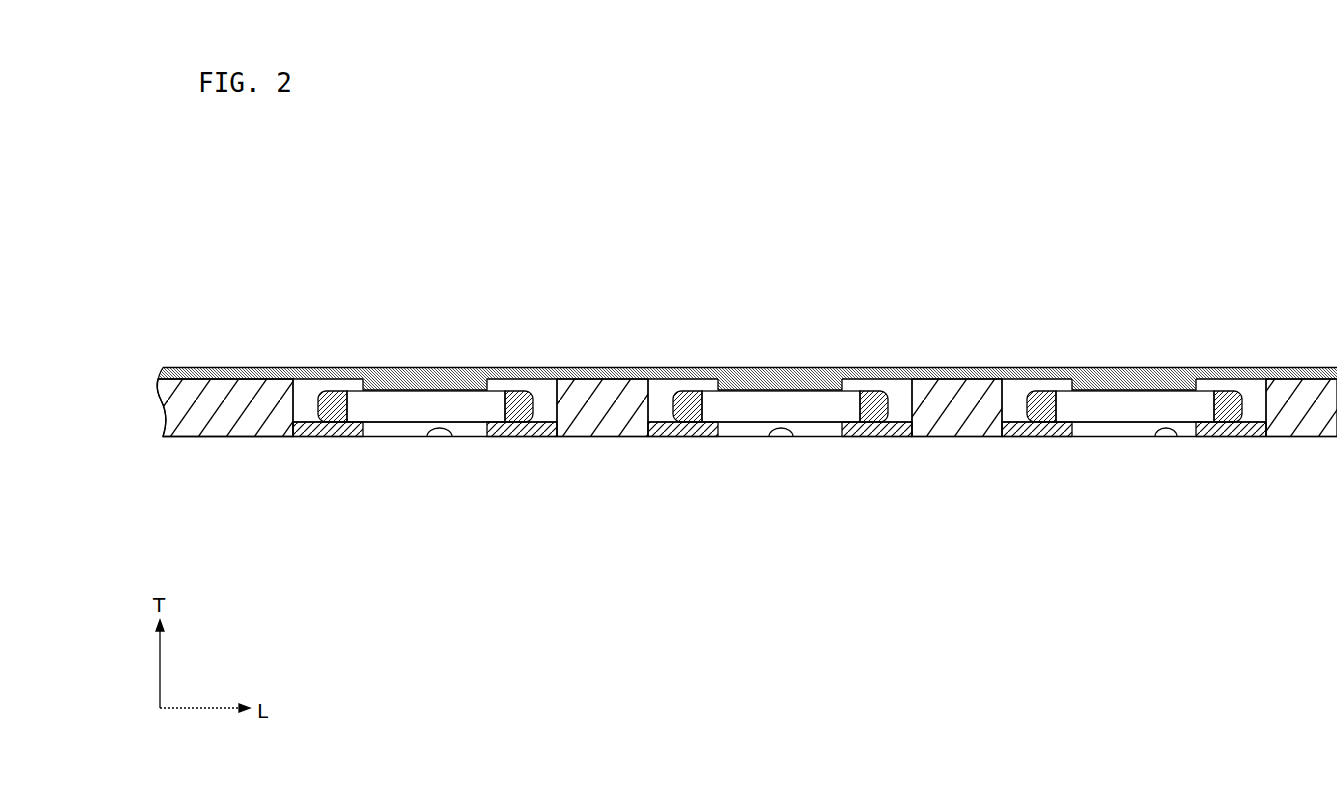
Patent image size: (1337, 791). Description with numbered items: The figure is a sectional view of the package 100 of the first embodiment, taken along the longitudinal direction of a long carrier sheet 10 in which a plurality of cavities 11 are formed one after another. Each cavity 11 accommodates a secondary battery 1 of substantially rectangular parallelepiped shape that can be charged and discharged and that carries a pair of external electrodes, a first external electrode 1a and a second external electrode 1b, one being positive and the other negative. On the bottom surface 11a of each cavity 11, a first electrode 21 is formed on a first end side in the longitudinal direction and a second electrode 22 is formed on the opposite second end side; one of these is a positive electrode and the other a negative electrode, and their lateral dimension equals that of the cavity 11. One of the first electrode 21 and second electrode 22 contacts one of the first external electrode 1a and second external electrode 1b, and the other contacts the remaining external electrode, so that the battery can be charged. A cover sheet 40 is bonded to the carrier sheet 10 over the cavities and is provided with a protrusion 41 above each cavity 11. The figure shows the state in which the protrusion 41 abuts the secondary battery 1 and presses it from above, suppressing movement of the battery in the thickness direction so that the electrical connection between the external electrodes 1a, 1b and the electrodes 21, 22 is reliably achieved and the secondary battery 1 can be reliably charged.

The package 100 is at (1050, 263).
The carrier sheet 10 is at (617, 436).
The cavity 11 is at (310, 387).
The bottom surface of the cavity 11a is at (452, 436).
The first electrode 21 is at (325, 436).
The second electrode 22 is at (520, 436).
The secondary battery 1 is at (394, 422).
The first external electrode 1a is at (340, 390).
The second external electrode 1b is at (522, 391).
The cover sheet 40 is at (769, 372).
The protrusion 41 is at (505, 378).